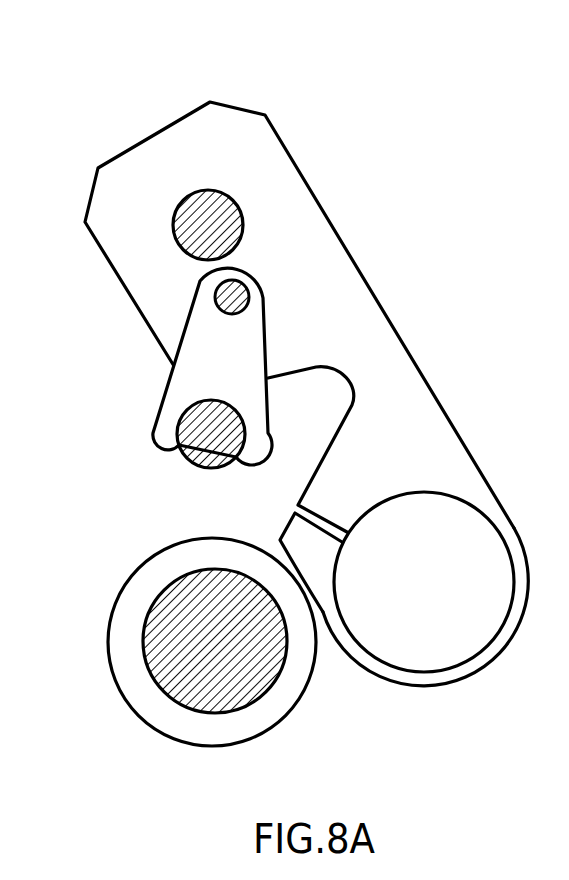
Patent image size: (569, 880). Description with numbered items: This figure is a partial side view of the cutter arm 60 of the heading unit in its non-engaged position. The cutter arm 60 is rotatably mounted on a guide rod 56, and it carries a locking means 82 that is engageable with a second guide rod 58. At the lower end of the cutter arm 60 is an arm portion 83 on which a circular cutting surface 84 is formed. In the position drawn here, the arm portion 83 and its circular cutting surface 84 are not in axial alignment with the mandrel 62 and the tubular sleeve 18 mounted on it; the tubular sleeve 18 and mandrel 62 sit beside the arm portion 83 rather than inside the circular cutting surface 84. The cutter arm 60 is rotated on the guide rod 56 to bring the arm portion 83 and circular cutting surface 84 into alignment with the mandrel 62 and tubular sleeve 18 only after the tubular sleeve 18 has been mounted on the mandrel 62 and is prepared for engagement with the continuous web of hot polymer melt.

The cutter arm 60 is at (287, 88).
The guide rod 56 is at (173, 213).
The locking means 82 is at (182, 360).
The guide rod 58 is at (190, 460).
The tubular sleeve 18 is at (116, 642).
The mandrel 62 is at (198, 702).
The arm portion 83 is at (405, 677).
The circular cutting surface 84 is at (452, 652).